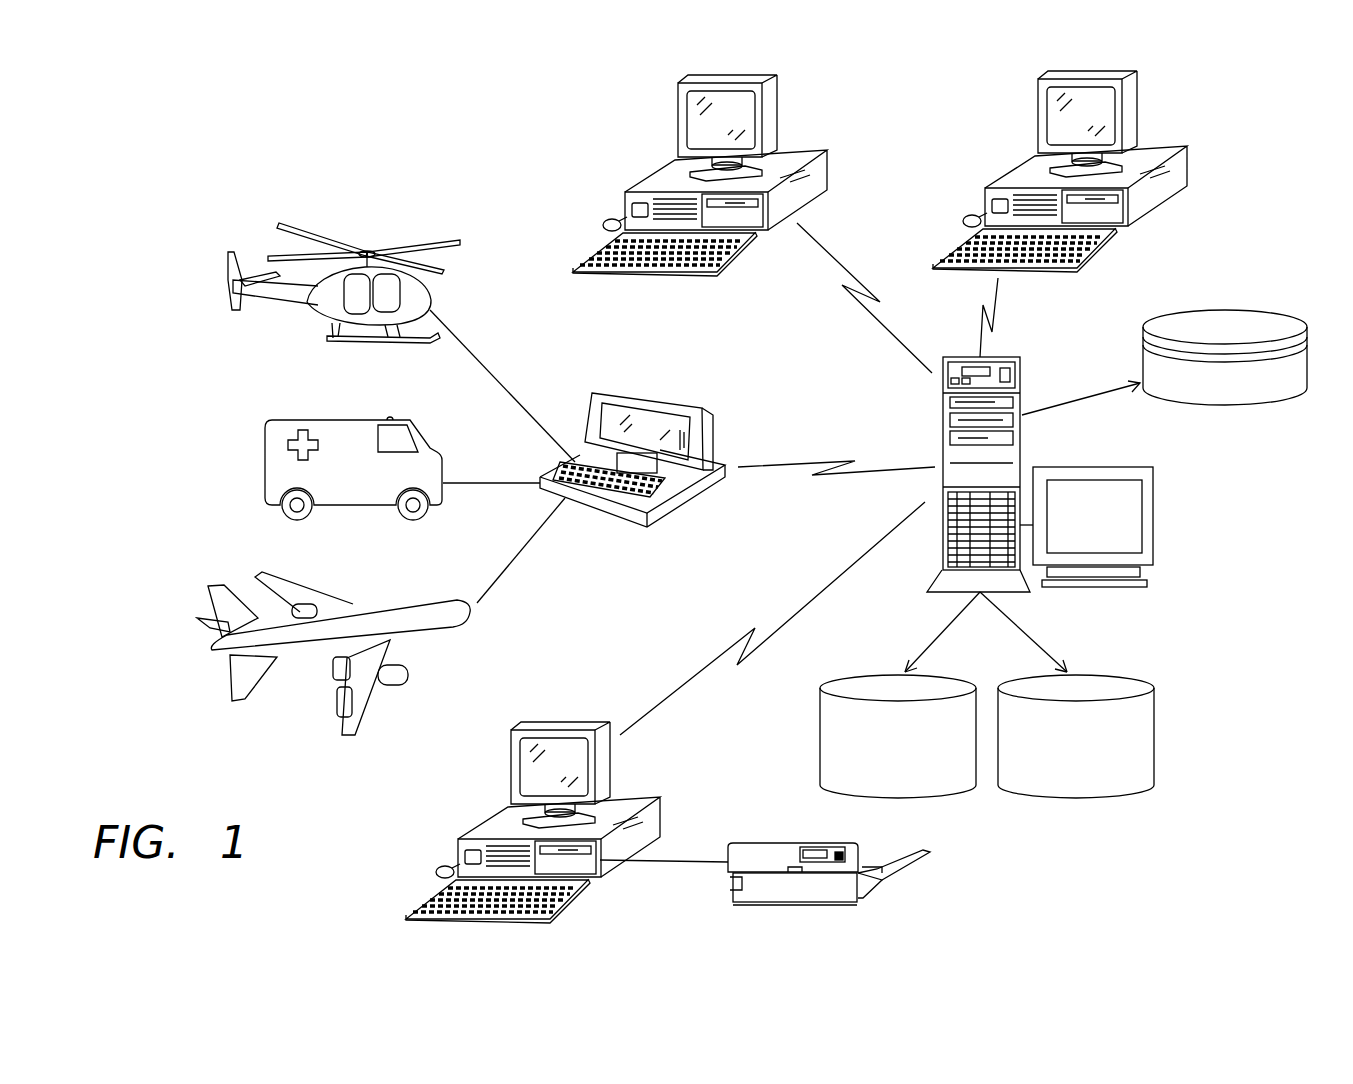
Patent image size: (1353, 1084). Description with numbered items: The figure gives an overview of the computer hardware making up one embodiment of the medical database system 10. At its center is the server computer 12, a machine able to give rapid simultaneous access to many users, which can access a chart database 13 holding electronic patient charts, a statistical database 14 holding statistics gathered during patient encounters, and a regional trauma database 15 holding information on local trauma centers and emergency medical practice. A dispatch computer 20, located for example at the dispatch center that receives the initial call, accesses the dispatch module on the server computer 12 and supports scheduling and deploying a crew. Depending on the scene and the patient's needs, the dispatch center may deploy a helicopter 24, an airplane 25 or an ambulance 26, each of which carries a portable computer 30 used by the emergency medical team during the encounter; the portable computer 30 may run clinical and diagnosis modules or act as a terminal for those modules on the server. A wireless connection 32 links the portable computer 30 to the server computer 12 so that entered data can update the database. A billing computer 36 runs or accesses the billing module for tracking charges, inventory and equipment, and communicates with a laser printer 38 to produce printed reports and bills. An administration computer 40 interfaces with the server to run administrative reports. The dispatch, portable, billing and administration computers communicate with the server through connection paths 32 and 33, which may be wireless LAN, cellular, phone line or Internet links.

The medical database system 10 is at (1249, 620).
The server computer 12 is at (1083, 463).
The chart database 13 is at (1233, 418).
The statistical database 14 is at (1103, 672).
The regional trauma database 15 is at (878, 675).
The dispatch computer 20 is at (790, 150).
The helicopter 24 is at (363, 252).
The airplane 25 is at (417, 602).
The ambulance 26 is at (347, 417).
The portable computer 30 is at (635, 397).
The wireless connection 32 is at (775, 465).
The connection paths 33 is at (828, 252).
The billing computer 36 is at (582, 722).
The laser printer 38 is at (828, 843).
The administration computer 40 is at (1025, 158).